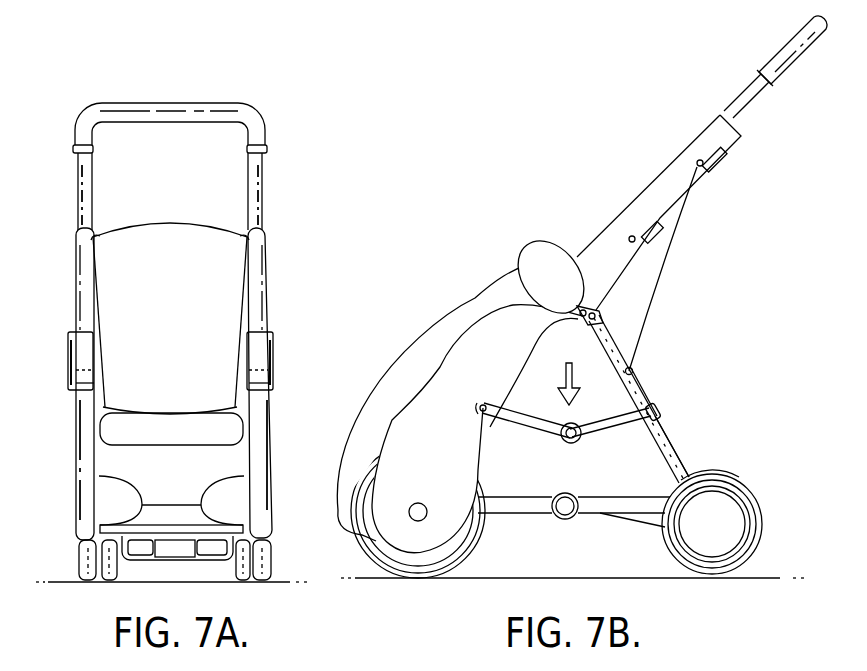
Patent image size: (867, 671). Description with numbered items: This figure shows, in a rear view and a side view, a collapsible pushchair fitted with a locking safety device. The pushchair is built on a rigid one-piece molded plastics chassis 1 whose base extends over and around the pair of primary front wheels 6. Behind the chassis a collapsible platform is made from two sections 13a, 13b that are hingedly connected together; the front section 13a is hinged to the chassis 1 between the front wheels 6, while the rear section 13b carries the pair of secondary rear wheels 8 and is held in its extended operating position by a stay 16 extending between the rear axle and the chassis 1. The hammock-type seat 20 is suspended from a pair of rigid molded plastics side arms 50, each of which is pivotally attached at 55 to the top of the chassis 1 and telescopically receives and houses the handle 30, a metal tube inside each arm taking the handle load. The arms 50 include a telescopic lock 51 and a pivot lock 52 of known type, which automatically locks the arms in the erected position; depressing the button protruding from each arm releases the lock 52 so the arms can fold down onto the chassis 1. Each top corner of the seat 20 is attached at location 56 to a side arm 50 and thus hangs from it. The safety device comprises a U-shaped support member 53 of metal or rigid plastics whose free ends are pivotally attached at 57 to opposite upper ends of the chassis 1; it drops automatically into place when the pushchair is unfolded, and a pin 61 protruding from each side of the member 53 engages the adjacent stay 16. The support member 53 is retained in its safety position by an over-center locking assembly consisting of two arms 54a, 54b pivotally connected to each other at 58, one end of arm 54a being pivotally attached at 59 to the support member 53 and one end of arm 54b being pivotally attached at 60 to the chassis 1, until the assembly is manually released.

In FIG. 7A, the chassis 1 is at (92, 478).
In FIG. 7B, the chassis 1 is at (433, 383).
In FIG. 7A, the primary front wheels 6 is at (87, 563).
In FIG. 7B, the primary front wheels 6 is at (460, 548).
In FIG. 7A, the secondary rear wheels 8 is at (240, 563).
In FIG. 7B, the secondary rear wheels 8 is at (743, 507).
In FIG. 7B, the front platform section 13a is at (523, 510).
In FIG. 7B, the rear platform section 13b is at (603, 500).
In FIG. 7B, the stay 16 is at (669, 453).
In FIG. 7A, the seat 20 is at (168, 233).
In FIG. 7B, the seat 20 is at (627, 347).
In FIG. 7A, the handle 30 is at (193, 107).
In FIG. 7B, the handle 30 is at (737, 102).
In FIG. 7A, the side arms 50 is at (90, 292).
In FIG. 7B, the side arms 50 is at (672, 177).
In FIG. 7B, the telescopic lock 51 is at (710, 152).
In FIG. 7B, the pivot lock 52 is at (662, 240).
In FIG. 7B, the U-shaped support member 53 is at (645, 390).
In FIG. 7B, the arm 54a is at (603, 425).
In FIG. 7B, the arm 54b is at (540, 425).
In FIG. 7A, the pivot attachment 55 is at (83, 358).
In FIG. 7B, the pivot attachment 55 is at (538, 258).
In FIG. 7A, the seat attachment location 56 is at (95, 243).
In FIG. 7B, the pivot attachment 57 is at (596, 310).
In FIG. 7B, the pivot connection 58 is at (572, 443).
In FIG. 7B, the pivot attachment 59 is at (657, 412).
In FIG. 7B, the pivot attachment 60 is at (483, 405).
In FIG. 7B, the pin 61 is at (633, 372).